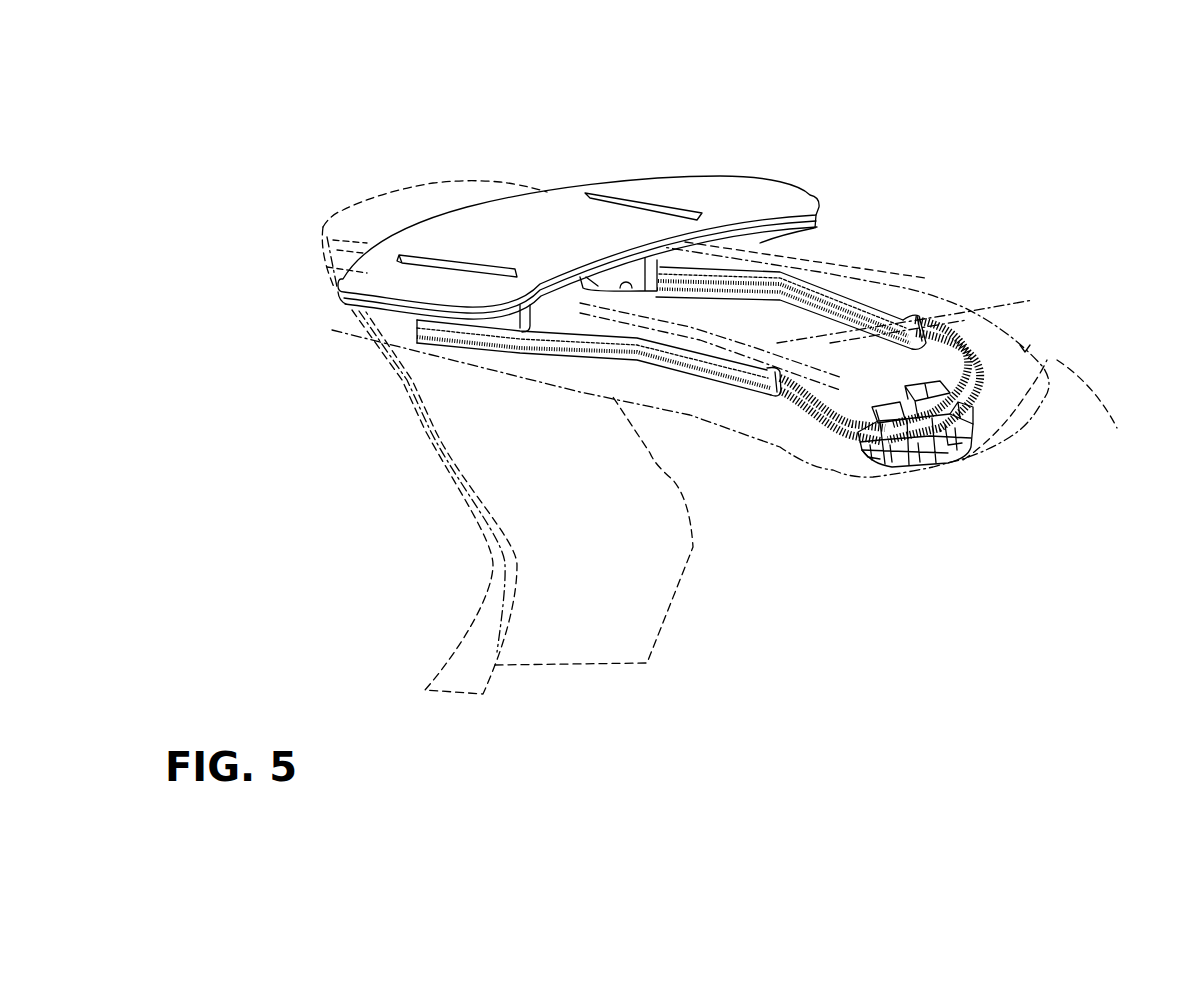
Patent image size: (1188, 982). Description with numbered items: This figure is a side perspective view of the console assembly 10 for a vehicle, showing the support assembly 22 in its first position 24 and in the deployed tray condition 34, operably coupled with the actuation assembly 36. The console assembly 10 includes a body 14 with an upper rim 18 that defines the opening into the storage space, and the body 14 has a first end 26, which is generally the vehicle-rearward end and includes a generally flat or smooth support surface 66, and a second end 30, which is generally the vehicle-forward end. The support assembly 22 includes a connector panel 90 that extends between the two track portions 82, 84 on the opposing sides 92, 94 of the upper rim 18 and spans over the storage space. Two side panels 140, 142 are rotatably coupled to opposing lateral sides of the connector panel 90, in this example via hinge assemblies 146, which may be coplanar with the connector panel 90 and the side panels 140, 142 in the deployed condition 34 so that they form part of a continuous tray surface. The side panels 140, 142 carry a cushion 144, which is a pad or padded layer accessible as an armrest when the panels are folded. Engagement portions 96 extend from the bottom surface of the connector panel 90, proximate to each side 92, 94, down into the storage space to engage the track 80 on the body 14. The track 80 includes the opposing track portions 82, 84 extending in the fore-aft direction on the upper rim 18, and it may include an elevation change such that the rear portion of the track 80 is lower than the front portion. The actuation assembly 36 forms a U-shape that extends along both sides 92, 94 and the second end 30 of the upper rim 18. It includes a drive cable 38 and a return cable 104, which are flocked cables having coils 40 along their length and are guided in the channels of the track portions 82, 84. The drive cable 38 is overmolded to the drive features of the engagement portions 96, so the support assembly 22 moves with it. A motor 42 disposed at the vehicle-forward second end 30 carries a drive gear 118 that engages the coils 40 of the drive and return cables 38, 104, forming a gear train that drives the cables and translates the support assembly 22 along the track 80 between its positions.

The console assembly 10 is at (887, 187).
The body 14 is at (403, 417).
The upper rim 18 is at (753, 427).
The support assembly 22 is at (539, 191).
The first position 24 is at (510, 200).
The first end 26 is at (375, 200).
The second end 30 is at (1013, 390).
The deployed tray condition 34 is at (633, 177).
The actuation assembly 36 is at (987, 440).
The drive cable 38 is at (968, 338).
The coils 40 is at (990, 367).
The motor 42 is at (940, 457).
The support surface 66 is at (373, 188).
The track 80 is at (839, 274).
The first track portion 82 is at (860, 293).
The second track portion 84 is at (553, 357).
The connector panel 90 is at (487, 227).
The first side 92 is at (903, 285).
The second side 94 is at (690, 387).
The engagement portions 96 is at (503, 317).
The return cable 104 is at (955, 312).
The drive gear 118 is at (877, 457).
The first side panel 140 is at (760, 187).
The second side panel 142 is at (370, 277).
The cushion 144 is at (360, 307).
The hinge assemblies 146 is at (418, 255).